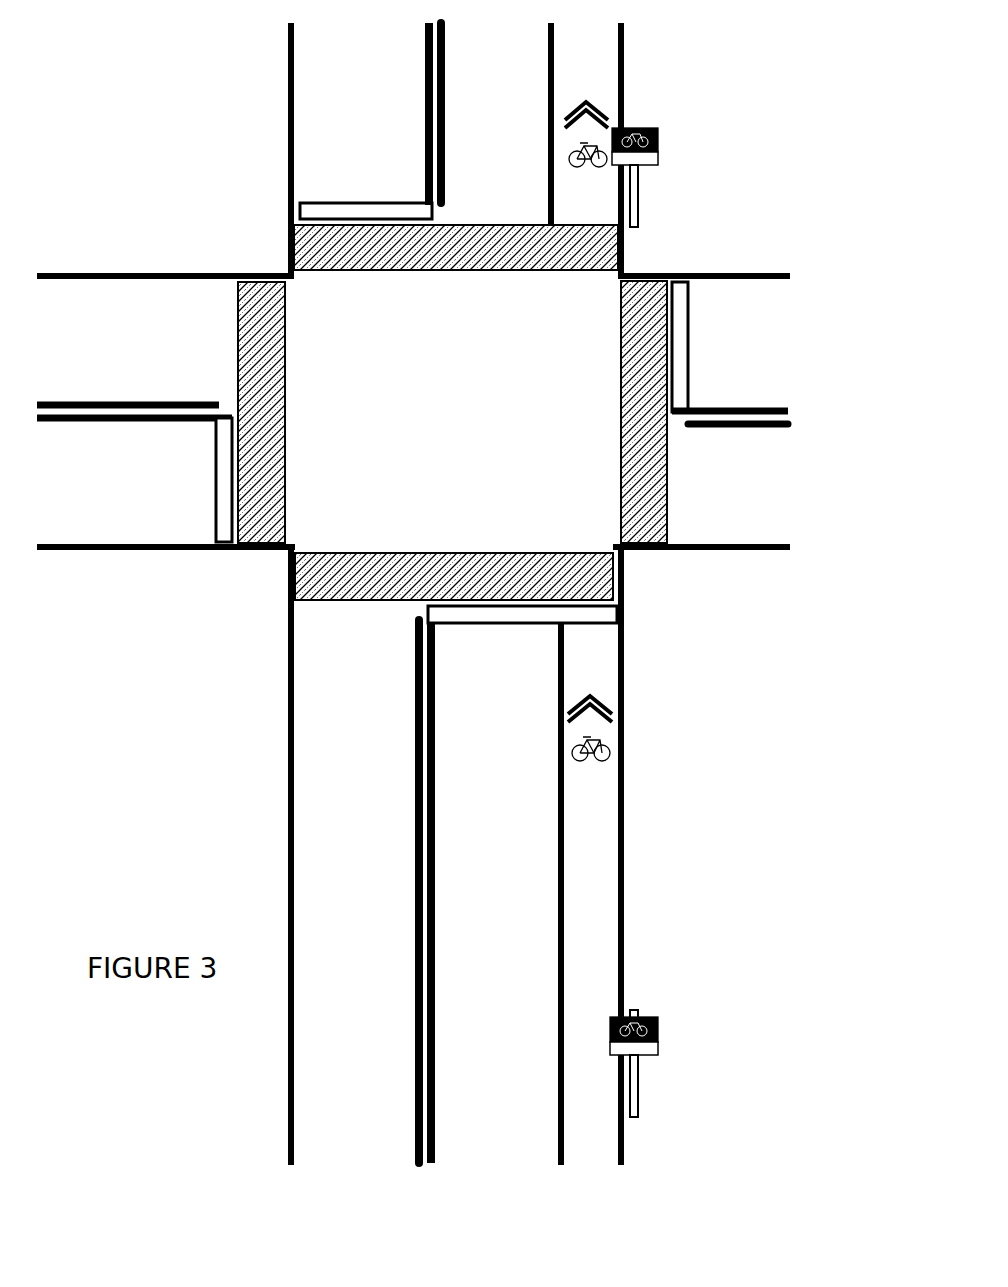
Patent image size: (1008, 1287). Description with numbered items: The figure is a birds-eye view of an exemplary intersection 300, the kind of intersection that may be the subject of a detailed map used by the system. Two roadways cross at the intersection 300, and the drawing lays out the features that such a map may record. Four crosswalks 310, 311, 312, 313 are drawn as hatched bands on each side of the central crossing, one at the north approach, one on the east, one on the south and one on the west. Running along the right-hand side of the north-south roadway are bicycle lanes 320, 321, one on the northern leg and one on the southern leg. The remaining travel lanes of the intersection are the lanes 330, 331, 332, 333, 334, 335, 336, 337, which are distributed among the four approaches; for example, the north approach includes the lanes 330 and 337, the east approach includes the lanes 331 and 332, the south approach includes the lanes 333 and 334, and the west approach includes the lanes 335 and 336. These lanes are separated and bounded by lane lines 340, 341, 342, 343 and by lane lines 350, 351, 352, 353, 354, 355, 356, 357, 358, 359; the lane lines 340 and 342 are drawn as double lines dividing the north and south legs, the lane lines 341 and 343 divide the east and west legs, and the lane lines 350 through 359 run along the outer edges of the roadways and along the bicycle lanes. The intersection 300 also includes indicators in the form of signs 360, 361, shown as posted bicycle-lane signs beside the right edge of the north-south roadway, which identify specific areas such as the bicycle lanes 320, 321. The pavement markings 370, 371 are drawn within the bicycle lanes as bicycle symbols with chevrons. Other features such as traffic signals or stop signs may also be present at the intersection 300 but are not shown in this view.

The intersection 300 is at (440, 421).
The crosswalk 310 is at (293, 255).
The crosswalk 311 is at (667, 523).
The crosswalk 312 is at (295, 580).
The crosswalk 313 is at (238, 510).
The bicycle lane 320 is at (596, 820).
The bicycle lane 321 is at (596, 38).
The lane 330 is at (495, 200).
The lane 331 is at (700, 343).
The lane 332 is at (700, 473).
The lane 333 is at (488, 800).
The lane 334 is at (370, 800).
The lane 335 is at (172, 474).
The lane 336 is at (165, 350).
The lane 337 is at (370, 178).
The lane line 340 is at (425, 118).
The lane line 341 is at (700, 397).
The lane line 342 is at (420, 745).
The lane line 343 is at (165, 400).
The lane line 350 is at (551, 92).
The lane line 351 is at (624, 80).
The lane line 352 is at (665, 272).
The lane line 353 is at (665, 551).
The lane line 354 is at (624, 680).
The lane line 355 is at (558, 690).
The lane line 356 is at (290, 719).
The lane line 357 is at (172, 546).
The lane line 358 is at (170, 272).
The lane line 359 is at (290, 84).
The sign 360 is at (660, 1035).
The sign 361 is at (660, 145).
The south bike lane pavement marking 370 is at (566, 760).
The north bike lane pavement marking 371 is at (562, 168).